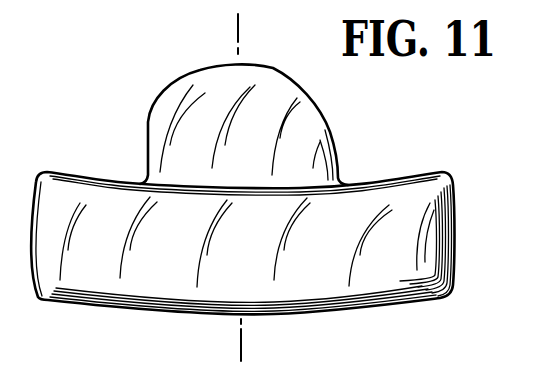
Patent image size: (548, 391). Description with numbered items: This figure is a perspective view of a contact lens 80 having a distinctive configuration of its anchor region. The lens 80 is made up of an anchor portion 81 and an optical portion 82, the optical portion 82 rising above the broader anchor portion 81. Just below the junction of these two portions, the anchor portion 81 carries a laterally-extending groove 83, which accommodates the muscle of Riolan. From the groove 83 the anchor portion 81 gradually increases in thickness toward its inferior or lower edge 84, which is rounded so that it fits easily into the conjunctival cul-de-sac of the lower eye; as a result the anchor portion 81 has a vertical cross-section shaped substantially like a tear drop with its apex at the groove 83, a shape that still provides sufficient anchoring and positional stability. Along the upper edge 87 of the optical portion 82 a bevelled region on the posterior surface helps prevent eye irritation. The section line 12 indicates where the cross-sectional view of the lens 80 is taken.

The section line 12- 12 is at (229, 344).
The contact lens 80 is at (421, 313).
The anchor portion 81 is at (418, 241).
The optical portion 82 is at (289, 137).
The laterally-extending groove 83 is at (373, 186).
The inferior or lower edge 84 is at (307, 312).
The upper edge 87 is at (259, 63).